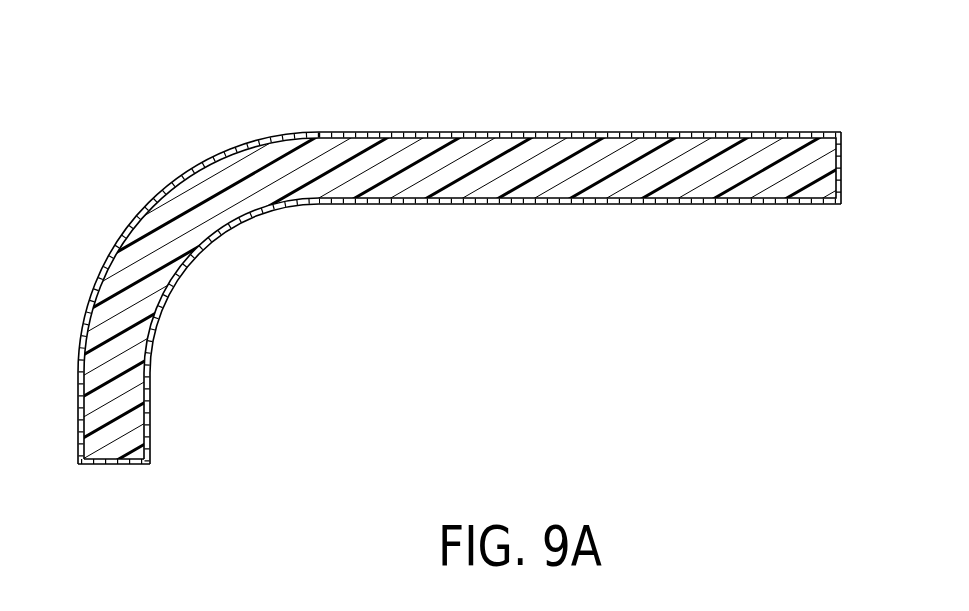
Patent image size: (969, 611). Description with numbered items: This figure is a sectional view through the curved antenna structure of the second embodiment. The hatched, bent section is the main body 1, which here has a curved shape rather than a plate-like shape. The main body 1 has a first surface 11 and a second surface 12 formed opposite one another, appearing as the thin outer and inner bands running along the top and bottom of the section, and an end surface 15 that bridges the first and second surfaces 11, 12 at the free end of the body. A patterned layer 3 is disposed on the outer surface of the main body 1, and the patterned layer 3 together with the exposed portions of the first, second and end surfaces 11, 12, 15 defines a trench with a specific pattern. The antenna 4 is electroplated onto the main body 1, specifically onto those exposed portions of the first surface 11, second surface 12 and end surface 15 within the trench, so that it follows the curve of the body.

The main body 1 is at (757, 158).
The patterned layer 3 is at (490, 132).
The antenna 4 is at (255, 140).
The first surface 11 is at (613, 137).
The second surface 12 is at (677, 200).
The end surface 15 is at (105, 463).